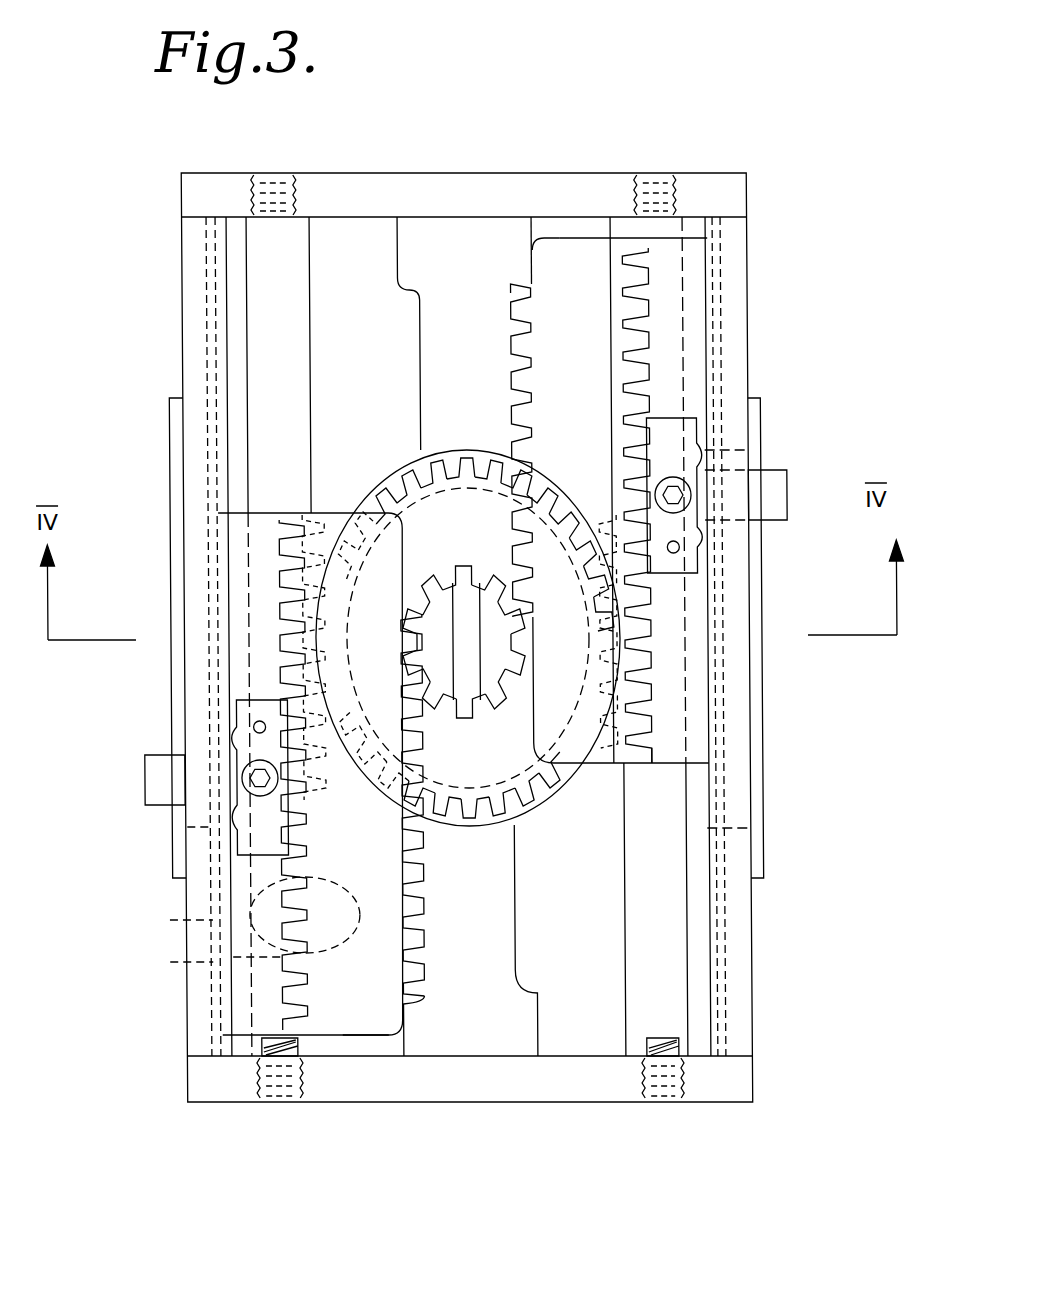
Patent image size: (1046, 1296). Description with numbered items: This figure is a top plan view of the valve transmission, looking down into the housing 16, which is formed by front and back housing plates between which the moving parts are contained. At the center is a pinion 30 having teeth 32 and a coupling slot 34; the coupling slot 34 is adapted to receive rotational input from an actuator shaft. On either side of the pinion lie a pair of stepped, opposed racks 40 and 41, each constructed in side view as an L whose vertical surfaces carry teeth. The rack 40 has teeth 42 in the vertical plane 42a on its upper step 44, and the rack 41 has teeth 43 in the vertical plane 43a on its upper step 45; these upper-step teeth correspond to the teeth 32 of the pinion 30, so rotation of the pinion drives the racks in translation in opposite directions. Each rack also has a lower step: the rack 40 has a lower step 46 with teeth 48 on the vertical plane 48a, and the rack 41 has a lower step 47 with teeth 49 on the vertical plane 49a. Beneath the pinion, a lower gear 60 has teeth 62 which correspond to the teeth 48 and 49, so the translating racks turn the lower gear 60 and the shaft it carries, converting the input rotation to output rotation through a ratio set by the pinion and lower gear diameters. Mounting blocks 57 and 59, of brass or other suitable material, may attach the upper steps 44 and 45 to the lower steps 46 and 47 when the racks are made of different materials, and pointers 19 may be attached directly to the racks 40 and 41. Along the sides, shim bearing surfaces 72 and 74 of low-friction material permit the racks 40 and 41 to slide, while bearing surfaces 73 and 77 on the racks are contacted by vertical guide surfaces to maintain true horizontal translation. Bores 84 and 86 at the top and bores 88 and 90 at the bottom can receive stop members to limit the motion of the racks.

The housing 16 is at (753, 965).
The pointers 19 is at (147, 777).
The pinion 30 is at (493, 641).
The teeth 32 is at (503, 683).
The coupling slot 34 is at (470, 613).
The rack 40 is at (371, 945).
The rack 41 is at (652, 410).
The teeth 42 is at (408, 856).
The vertical plane 42a is at (413, 968).
The teeth 43 is at (525, 347).
The vertical plane 43a is at (530, 287).
The upper step 44 is at (354, 1030).
The upper step 45 is at (585, 292).
The lower step 46 is at (275, 572).
The lower step 47 is at (668, 673).
The teeth 48 is at (281, 880).
The vertical plane 48a is at (348, 928).
The teeth 49 is at (707, 328).
The vertical plane 49a is at (692, 335).
The mounting block 57 is at (260, 602).
The mounting block 59 is at (668, 713).
The lower gear 60 is at (464, 525).
The teeth 62 is at (375, 462).
The shim bearing surface 72 is at (267, 293).
The bearing surface 73 is at (402, 1003).
The shim bearing surface 74 is at (668, 900).
The bearing surface 77 is at (532, 265).
The bore 84 is at (275, 175).
The bore 86 is at (658, 175).
The bore 88 is at (280, 1103).
The bore 90 is at (655, 1103).